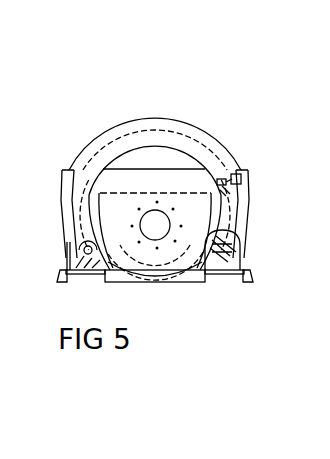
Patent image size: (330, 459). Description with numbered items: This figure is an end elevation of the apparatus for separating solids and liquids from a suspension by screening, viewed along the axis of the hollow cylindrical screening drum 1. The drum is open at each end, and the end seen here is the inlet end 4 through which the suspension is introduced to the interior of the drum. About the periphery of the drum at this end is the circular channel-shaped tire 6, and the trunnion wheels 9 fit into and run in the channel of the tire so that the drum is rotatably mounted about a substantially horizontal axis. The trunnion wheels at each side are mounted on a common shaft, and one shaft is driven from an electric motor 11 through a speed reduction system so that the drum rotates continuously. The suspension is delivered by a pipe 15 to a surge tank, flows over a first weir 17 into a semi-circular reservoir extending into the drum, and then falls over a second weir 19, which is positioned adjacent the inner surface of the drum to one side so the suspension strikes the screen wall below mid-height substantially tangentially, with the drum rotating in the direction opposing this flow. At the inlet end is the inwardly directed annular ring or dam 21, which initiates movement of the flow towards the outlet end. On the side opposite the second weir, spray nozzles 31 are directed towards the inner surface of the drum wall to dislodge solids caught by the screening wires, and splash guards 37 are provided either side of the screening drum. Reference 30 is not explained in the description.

The screening drum 1 is at (203, 120).
The inlet end 4 is at (153, 164).
The tire 6 is at (208, 141).
The trunnion wheel 9 is at (70, 241).
The electric motor 11 is at (228, 247).
The pipe 15 is at (153, 240).
The first weir 17 is at (125, 195).
The second weir 19 is at (99, 203).
The annular ring or dam 21 is at (208, 165).
The latch 30 is at (223, 175).
The nozzles 31 is at (222, 192).
The splash guards 37 is at (65, 181).